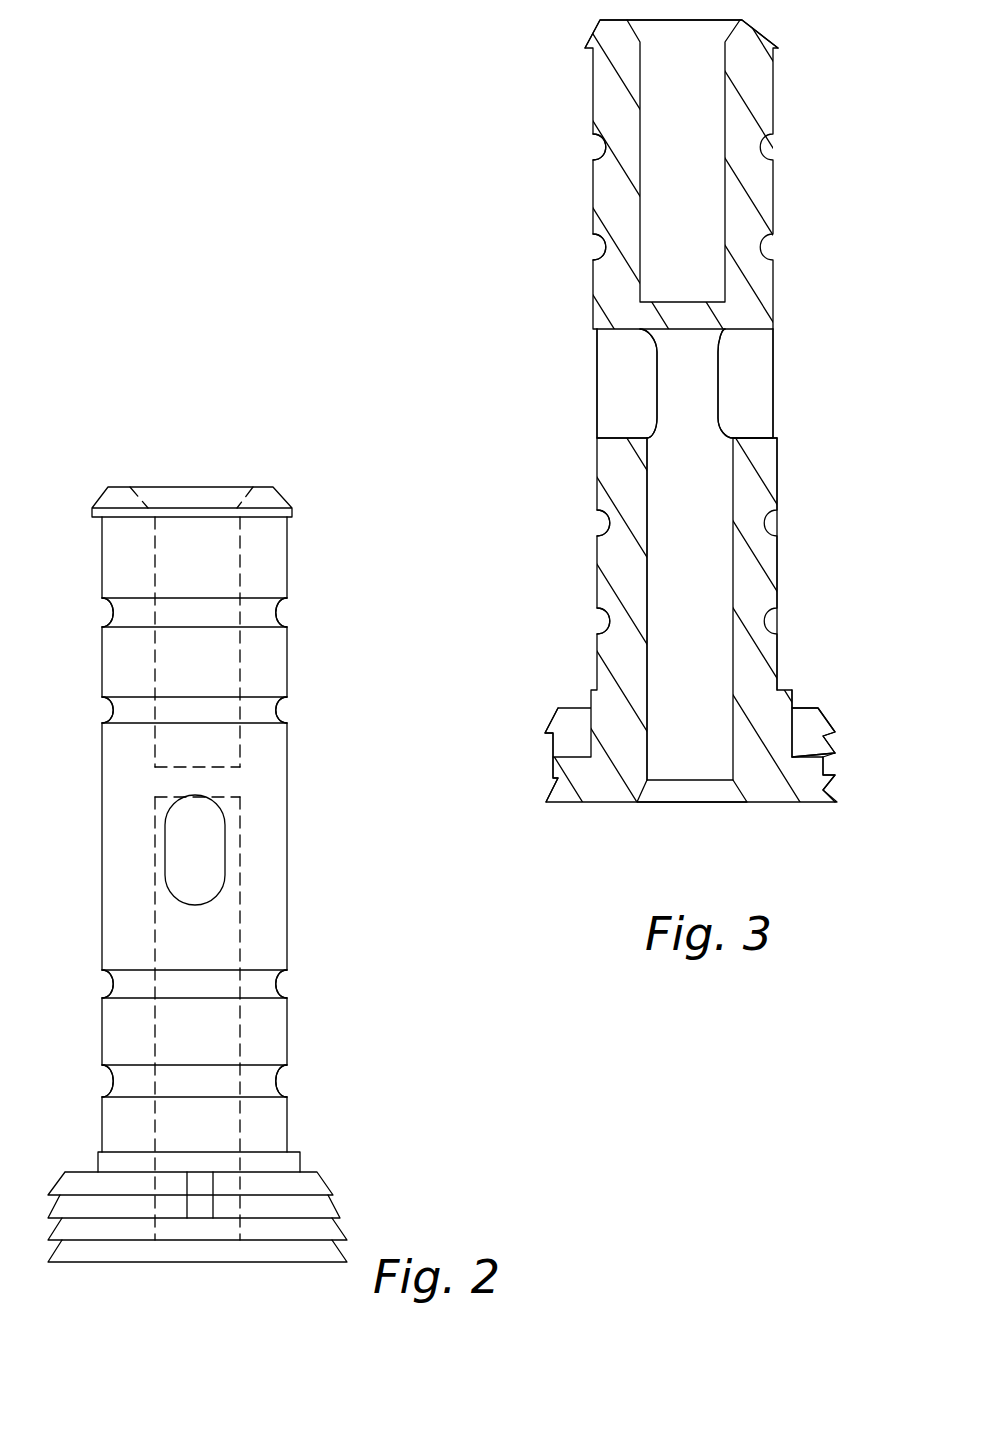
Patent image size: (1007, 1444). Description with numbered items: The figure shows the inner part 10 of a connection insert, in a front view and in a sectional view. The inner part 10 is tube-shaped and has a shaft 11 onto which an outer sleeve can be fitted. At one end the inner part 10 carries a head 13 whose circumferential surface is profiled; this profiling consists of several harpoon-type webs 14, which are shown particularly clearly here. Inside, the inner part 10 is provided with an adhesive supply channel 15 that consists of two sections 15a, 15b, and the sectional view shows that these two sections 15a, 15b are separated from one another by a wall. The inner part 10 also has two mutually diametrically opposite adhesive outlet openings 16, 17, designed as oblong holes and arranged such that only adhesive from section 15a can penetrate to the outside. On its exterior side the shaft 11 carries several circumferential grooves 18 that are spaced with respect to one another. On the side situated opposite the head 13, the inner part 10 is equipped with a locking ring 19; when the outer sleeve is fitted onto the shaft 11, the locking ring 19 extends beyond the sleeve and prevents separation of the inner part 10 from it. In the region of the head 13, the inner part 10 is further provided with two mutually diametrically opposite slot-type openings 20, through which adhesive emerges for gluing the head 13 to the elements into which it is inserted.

In FIG. 3, the inner part 10 is at (572, 667).
In FIG. 2, the inner part 10 is at (308, 908).
In FIG. 3, the shaft 11 is at (748, 570).
In FIG. 3, the head 13 is at (810, 772).
In FIG. 3, the harpoon-type webs 14 is at (552, 740).
In FIG. 2, the harpoon-type webs 14 is at (352, 1259).
In FIG. 3, the adhesive supply channel 15 is at (660, 808).
In FIG. 3, the section of the adhesive supply channel 15a is at (692, 688).
In FIG. 3, the section of the adhesive supply channel 15b is at (683, 150).
In FIG. 3, the adhesive outlet opening 16 is at (613, 383).
In FIG. 3, the adhesive outlet opening 17 is at (763, 382).
In FIG. 3, the circumferential grooves 18 is at (598, 247).
In FIG. 2, the circumferential grooves 18 is at (283, 713).
In FIG. 3, the locking ring 19 is at (585, 50).
In FIG. 2, the locking ring 19 is at (292, 505).
In FIG. 2, the slot-type openings 20 is at (197, 1200).